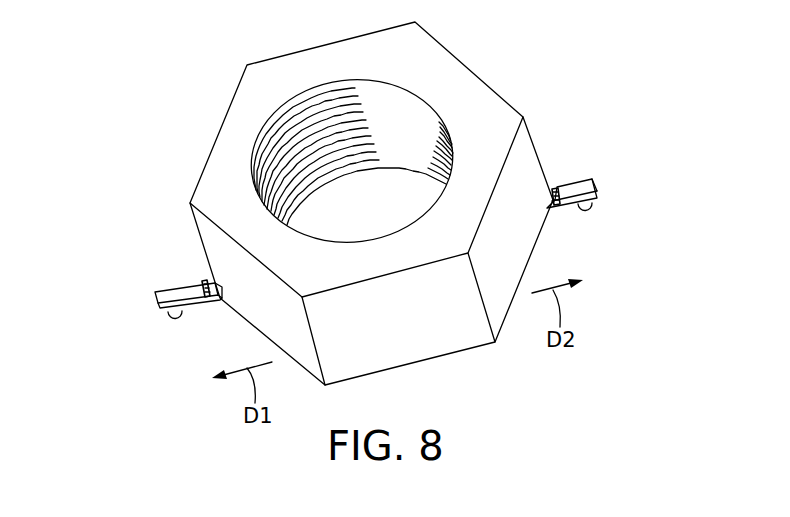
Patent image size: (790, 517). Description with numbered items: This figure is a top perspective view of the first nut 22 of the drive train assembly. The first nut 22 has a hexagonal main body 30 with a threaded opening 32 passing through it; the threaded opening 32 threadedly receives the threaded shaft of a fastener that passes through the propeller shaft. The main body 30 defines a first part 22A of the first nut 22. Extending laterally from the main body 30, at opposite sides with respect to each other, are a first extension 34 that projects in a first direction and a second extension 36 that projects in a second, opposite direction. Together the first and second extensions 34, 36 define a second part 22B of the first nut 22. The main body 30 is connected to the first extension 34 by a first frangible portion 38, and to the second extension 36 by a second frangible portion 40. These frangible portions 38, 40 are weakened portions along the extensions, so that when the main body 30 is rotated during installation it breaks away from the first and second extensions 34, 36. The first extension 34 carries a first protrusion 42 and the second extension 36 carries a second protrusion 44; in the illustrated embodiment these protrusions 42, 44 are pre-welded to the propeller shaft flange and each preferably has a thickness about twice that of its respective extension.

The first nut 22 is at (492, 23).
The first part 22A is at (262, 96).
The second part 22B is at (112, 223).
The main body 30 is at (470, 105).
The threaded opening 32 is at (332, 117).
The first extension 34 is at (182, 292).
The second extension 36 is at (575, 183).
The first frangible portion 38 is at (207, 282).
The second frangible portion 40 is at (553, 182).
The first protrusion 42 is at (168, 318).
The second protrusion 44 is at (585, 212).